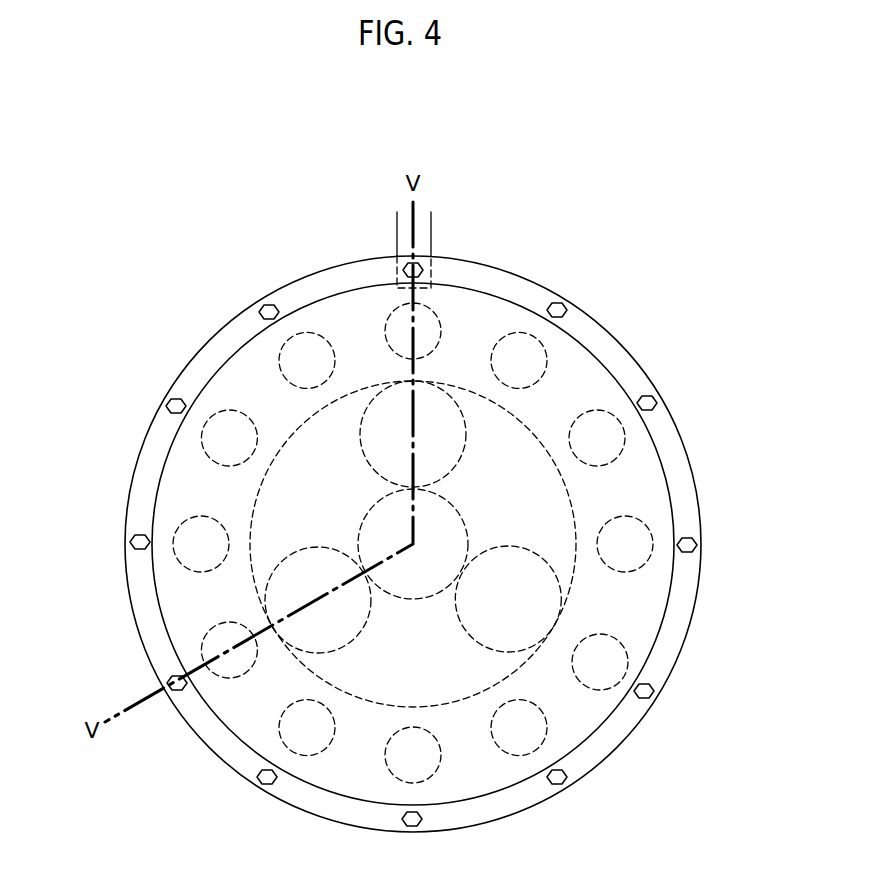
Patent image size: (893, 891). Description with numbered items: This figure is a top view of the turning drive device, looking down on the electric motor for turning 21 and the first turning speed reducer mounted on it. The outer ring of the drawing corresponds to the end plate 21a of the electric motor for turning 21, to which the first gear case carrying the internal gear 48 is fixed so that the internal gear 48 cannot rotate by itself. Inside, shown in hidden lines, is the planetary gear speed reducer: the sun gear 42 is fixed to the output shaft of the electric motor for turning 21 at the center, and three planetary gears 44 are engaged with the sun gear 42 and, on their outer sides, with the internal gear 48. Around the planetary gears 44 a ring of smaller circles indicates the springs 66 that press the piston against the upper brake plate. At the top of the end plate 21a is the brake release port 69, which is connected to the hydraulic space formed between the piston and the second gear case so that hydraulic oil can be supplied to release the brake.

The electric motor for turning 21 is at (164, 467).
The end plate 21a is at (128, 543).
The sun gear 42 is at (455, 510).
The planetary gear 44 is at (547, 557).
The internal gear 48 is at (572, 580).
The spring 66 is at (611, 407).
The brake release port 69 is at (397, 255).